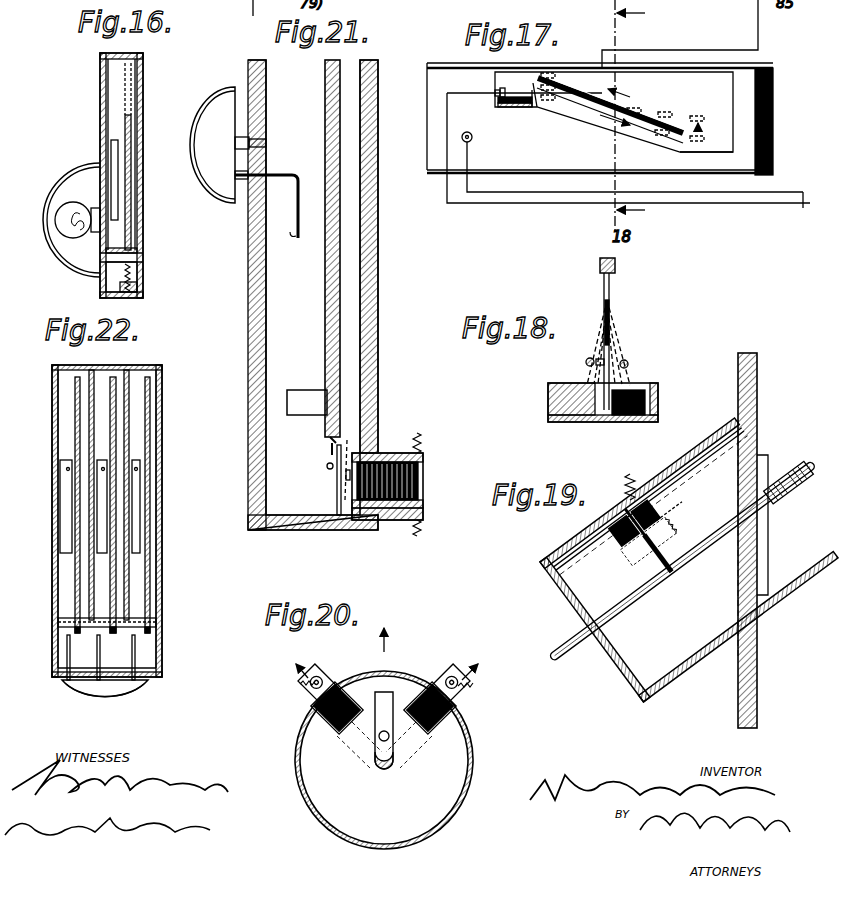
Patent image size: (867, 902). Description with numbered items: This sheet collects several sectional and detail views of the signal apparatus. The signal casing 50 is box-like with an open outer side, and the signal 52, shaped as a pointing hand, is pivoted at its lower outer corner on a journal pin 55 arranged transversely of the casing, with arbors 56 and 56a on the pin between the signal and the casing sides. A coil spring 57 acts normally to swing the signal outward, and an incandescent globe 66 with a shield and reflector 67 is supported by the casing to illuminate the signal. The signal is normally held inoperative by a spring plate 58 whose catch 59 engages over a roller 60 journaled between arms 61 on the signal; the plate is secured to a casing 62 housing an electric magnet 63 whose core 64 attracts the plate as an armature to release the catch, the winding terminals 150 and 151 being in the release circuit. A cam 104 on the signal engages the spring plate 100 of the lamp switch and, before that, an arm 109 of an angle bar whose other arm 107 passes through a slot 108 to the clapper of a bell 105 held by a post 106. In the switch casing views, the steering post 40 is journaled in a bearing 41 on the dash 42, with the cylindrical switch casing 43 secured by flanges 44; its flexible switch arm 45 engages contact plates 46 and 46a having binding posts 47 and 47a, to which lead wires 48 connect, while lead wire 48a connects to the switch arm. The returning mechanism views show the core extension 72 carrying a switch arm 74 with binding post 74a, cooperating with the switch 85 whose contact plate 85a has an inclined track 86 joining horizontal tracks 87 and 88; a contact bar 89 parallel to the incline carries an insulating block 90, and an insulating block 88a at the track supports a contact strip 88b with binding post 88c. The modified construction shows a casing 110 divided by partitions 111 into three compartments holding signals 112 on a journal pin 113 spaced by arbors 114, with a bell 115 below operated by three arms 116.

In FIG. 16, the signal casing 50 is at (101, 54).
In FIG. 21, the signal casing 50 is at (379, 228).
In FIG. 16, the signal 52 is at (131, 125).
In FIG. 21, the signal 52 is at (325, 272).
In FIG. 16, the journal pin 55 is at (143, 253).
In FIG. 16, the arbor 56 is at (100, 280).
In FIG. 16, the arbor 56a is at (137, 268).
In FIG. 16, the coil spring 57 is at (137, 289).
In FIG. 16, the incandescent globe 66 is at (76, 200).
In FIG. 16, the shield and reflector 67 is at (50, 186).
In FIG. 21, the cam 104 is at (305, 398).
In FIG. 21, the bell 105 is at (218, 158).
In FIG. 21, the post 106 is at (256, 138).
In FIG. 21, the arm 107 is at (272, 173).
In FIG. 21, the slot 108 is at (250, 198).
In FIG. 21, the arm 109 is at (298, 246).
In FIG. 21, the spring plate 58 is at (337, 490).
In FIG. 21, the catch 59 is at (330, 456).
In FIG. 21, the roller 60 is at (328, 470).
In FIG. 21, the arms 61 is at (330, 442).
In FIG. 21, the casing 62 is at (392, 521).
In FIG. 21, the electric magnet 63 is at (405, 478).
In FIG. 21, the core 64 is at (350, 462).
In FIG. 21, the terminal 150 is at (422, 443).
In FIG. 21, the terminal 151 is at (422, 530).
In FIG. 17, the lead wire 48a is at (742, 208).
In FIG. 17, the switch 85 is at (738, 108).
In FIG. 18, the switch 85 is at (548, 390).
In FIG. 17, the contact plate 85a is at (519, 161).
In FIG. 17, the inclined track 86 is at (582, 112).
In FIG. 17, the switch arm 74 is at (608, 108).
In FIG. 18, the switch arm 74 is at (618, 372).
In FIG. 18, the binding post 74a is at (588, 358).
In FIG. 17, the track 87 is at (710, 153).
In FIG. 17, the track 88 is at (505, 108).
In FIG. 17, the insulating block 88a is at (527, 110).
In FIG. 17, the contact strip 88b is at (503, 88).
In FIG. 17, the binding post 88c is at (495, 92).
In FIG. 17, the contact bar 89 is at (652, 135).
In FIG. 17, the insulating block 90 is at (664, 112).
In FIG. 18, the extension 72 is at (616, 265).
In FIG. 19, the steering post 40 is at (696, 583).
In FIG. 20, the steering post 40 is at (391, 765).
In FIG. 19, the bearing 41 is at (767, 461).
In FIG. 19, the dash of an automobile 42 is at (758, 366).
In FIG. 19, the switch casing 43 is at (665, 577).
In FIG. 20, the switch casing 43 is at (456, 816).
In FIG. 19, the flange 44 is at (752, 644).
In FIG. 19, the switch arm 45 is at (631, 594).
In FIG. 20, the switch arm 45 is at (388, 693).
In FIG. 20, the contact plate 46 is at (326, 728).
In FIG. 19, the contact plate 46a is at (595, 604).
In FIG. 19, the binding post 47 is at (699, 537).
In FIG. 20, the binding post 47 is at (325, 680).
In FIG. 20, the binding post 47a is at (447, 678).
In FIG. 19, the lead wire 48 is at (634, 470).
In FIG. 20, the lead wire 48 is at (298, 686).
In FIG. 22, the spring plate 100 is at (103, 510).
In FIG. 22, the casing 110 is at (53, 376).
In FIG. 22, the partitions 111 is at (134, 376).
In FIG. 22, the signals 112 is at (152, 395).
In FIG. 22, the journal pin 113 is at (157, 620).
In FIG. 22, the arbors 114 is at (114, 616).
In FIG. 22, the bell 115 is at (84, 700).
In FIG. 22, the arms 116 is at (66, 645).